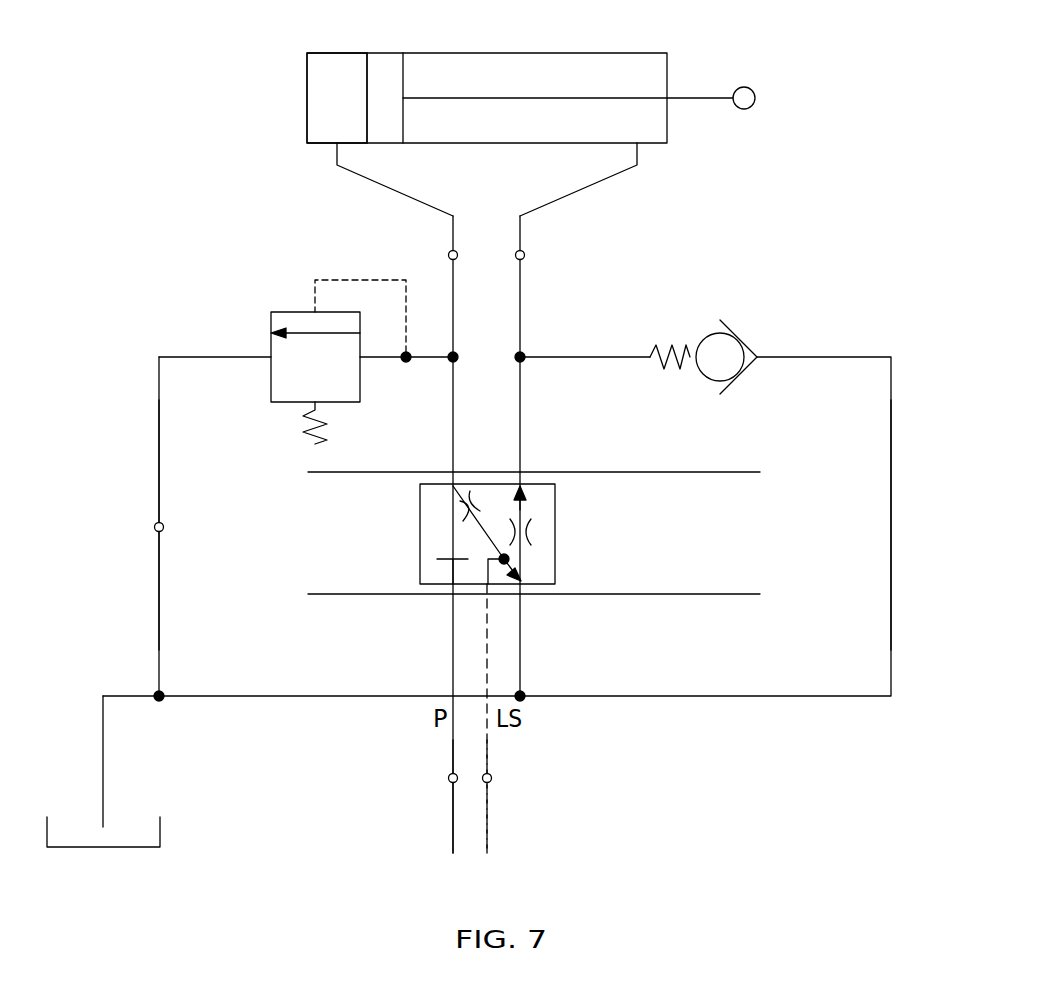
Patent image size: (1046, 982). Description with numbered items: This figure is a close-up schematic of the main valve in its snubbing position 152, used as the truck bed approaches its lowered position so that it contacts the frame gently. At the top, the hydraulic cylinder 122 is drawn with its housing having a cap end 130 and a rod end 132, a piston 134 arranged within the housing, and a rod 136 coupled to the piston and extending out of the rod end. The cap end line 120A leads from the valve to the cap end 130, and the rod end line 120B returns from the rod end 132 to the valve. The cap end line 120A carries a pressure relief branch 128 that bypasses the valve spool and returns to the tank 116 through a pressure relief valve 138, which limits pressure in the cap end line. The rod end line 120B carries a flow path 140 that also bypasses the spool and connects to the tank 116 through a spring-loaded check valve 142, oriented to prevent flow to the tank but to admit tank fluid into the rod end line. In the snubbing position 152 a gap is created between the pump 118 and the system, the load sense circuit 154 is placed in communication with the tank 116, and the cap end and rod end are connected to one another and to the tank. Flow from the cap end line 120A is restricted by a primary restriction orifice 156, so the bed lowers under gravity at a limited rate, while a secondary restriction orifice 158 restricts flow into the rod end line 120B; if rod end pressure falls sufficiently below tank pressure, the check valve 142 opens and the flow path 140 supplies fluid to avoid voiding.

The tank 116 is at (162, 829).
The pump 118 is at (448, 778).
The cap end line 120A is at (448, 255).
The rod end line 120B is at (525, 255).
The hydraulic cylinder 122 is at (527, 43).
The pressure relief branch 128 is at (154, 527).
The cap end 130 is at (306, 98).
The rod end 132 is at (668, 74).
The piston 134 is at (387, 52).
The rod 136 is at (747, 110).
The pressure relief valve 138 is at (292, 311).
The flow path 140 is at (893, 525).
The spring-loaded check valve 142 is at (740, 334).
The snubbing position 152 is at (488, 516).
The load sense circuit 154 is at (492, 778).
The primary restriction orifice 156 is at (464, 503).
The secondary restriction orifice 158 is at (537, 536).